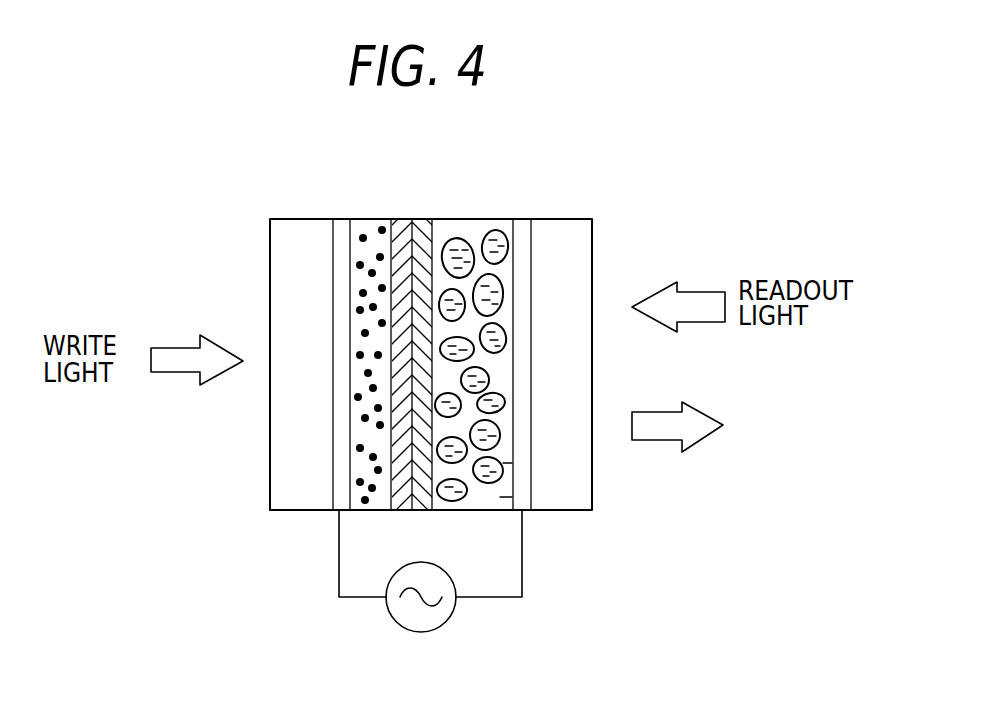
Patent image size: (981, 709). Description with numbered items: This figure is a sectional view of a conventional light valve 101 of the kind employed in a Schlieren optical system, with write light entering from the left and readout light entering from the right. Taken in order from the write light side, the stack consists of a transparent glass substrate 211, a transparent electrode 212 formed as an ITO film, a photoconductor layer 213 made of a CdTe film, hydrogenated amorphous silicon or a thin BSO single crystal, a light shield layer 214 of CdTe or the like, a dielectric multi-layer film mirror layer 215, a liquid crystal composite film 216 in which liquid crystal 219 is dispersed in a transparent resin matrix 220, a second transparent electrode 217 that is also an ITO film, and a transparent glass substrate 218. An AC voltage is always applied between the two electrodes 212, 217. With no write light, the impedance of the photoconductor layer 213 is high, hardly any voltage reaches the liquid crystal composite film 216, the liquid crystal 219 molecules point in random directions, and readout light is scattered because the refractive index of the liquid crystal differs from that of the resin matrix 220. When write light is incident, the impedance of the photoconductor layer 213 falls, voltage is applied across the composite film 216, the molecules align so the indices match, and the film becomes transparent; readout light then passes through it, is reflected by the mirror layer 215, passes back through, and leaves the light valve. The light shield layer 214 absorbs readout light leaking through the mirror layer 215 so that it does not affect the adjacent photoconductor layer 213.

The light valve 101 is at (285, 200).
The transparent glass substrate 211 is at (275, 237).
The transparent electrode 212 is at (343, 222).
The photoconductor layer 213 is at (367, 220).
The light shield layer 214 is at (400, 220).
The dielectric multi-layer film mirror layer 215 is at (421, 225).
The liquid crystal composite film 216 is at (470, 228).
The transparent electrode 217 is at (523, 223).
The transparent glass substrate 218 is at (583, 257).
The liquid crystal 219 is at (503, 463).
The transparent resin matrix 220 is at (500, 497).